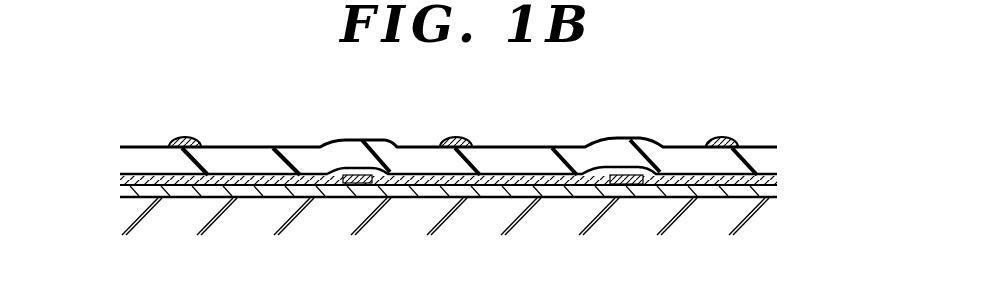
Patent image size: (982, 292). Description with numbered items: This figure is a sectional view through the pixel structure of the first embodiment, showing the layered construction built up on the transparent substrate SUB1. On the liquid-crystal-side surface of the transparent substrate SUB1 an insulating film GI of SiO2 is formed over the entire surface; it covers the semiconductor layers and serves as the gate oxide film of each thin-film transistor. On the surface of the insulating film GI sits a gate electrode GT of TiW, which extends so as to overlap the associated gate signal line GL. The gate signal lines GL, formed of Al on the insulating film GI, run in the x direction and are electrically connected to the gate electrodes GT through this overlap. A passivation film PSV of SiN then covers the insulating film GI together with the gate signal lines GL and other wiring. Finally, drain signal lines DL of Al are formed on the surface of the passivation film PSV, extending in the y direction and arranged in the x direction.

The drain signal line DL is at (185, 137).
The gate electrode GT is at (348, 176).
The gate signal line GL is at (563, 183).
The insulating film GI is at (127, 190).
The passivation film PSV is at (763, 158).
The transparent substrate SUB1 is at (750, 208).